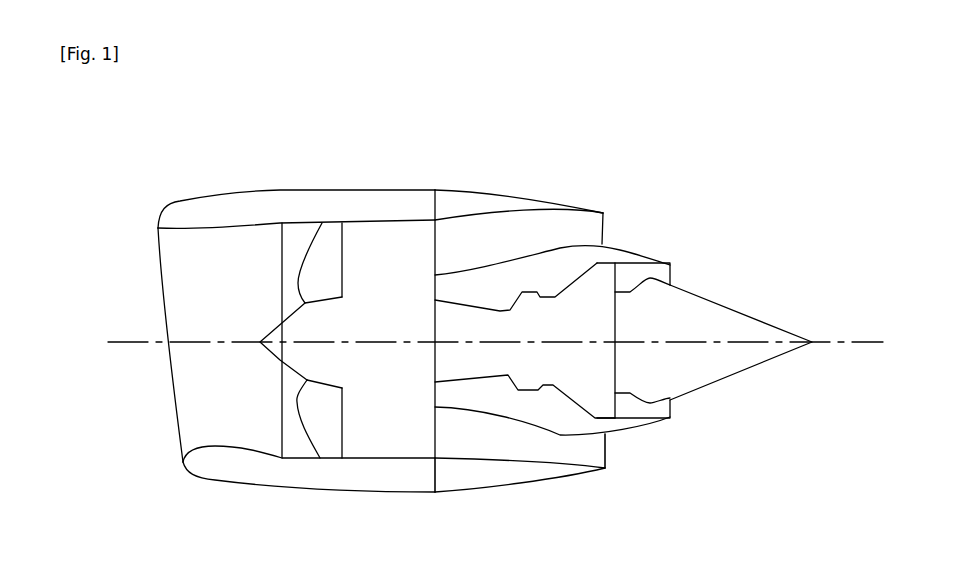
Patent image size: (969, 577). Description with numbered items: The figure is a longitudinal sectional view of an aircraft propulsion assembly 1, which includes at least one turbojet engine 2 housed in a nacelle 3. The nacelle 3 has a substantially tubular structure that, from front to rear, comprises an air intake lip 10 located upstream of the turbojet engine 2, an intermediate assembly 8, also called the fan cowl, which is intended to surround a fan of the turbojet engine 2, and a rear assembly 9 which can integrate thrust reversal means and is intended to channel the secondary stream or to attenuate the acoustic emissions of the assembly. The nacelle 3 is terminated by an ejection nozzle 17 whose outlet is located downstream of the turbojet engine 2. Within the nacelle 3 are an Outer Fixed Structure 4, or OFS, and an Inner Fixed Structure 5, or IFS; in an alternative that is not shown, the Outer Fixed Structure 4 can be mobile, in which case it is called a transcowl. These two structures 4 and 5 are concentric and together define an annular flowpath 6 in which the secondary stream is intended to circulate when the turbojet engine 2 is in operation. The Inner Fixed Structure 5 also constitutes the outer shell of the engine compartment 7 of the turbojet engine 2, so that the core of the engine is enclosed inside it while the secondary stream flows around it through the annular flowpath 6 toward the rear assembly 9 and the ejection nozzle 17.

The aircraft propulsion assembly 1 is at (611, 182).
The turbojet engine 2 is at (395, 435).
The nacelle 3 is at (190, 213).
The Outer Fixed Structure 4 is at (562, 205).
The Inner Fixed Structure 5 is at (588, 245).
The annular flowpath 6 is at (490, 437).
The engine compartment 7 is at (527, 362).
The intermediate assembly 8 is at (350, 189).
The rear assembly 9 is at (436, 189).
The air intake lip 10 is at (144, 217).
The ejection nozzle 17 is at (616, 240).